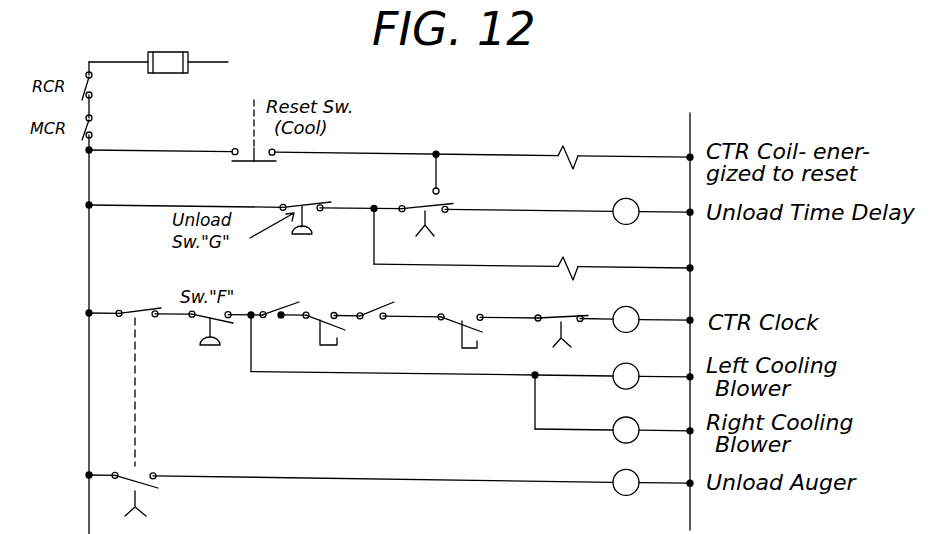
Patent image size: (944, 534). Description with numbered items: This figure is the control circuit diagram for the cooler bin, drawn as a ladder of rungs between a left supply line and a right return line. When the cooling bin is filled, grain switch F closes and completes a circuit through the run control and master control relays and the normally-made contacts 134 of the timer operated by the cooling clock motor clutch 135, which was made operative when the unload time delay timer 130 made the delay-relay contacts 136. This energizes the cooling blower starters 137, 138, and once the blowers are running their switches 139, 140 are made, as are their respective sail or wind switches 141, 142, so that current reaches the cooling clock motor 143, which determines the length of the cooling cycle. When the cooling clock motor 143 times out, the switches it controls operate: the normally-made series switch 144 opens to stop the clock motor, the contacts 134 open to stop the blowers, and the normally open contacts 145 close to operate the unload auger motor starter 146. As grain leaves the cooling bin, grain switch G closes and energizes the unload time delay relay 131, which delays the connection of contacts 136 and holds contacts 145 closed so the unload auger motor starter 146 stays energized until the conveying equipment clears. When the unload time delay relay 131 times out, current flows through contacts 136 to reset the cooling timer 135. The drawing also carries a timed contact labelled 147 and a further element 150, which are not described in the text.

The unload time delay timer 130 is at (613, 206).
The unload time delay relay 131 is at (572, 263).
The normally-made contacts 134 is at (158, 305).
The cooling clock motor clutch 135 is at (561, 164).
The delay-relay contacts 136 is at (441, 191).
The cooling blower starter 137 is at (638, 371).
The cooling blower starter 138 is at (637, 425).
The cooling blower switch 139 is at (277, 318).
The cooling blower switch 140 is at (385, 320).
The sail or wind switch 141 is at (345, 346).
The sail or wind switch 142 is at (470, 349).
The cooling clock motor 143 is at (637, 313).
The normally-made series switch 144 is at (561, 332).
The normally open contacts 145 is at (143, 475).
The unload auger motor starter 146 is at (635, 473).
The UTD time delay contact 147 is at (431, 217).
The contact 150 is at (203, 532).